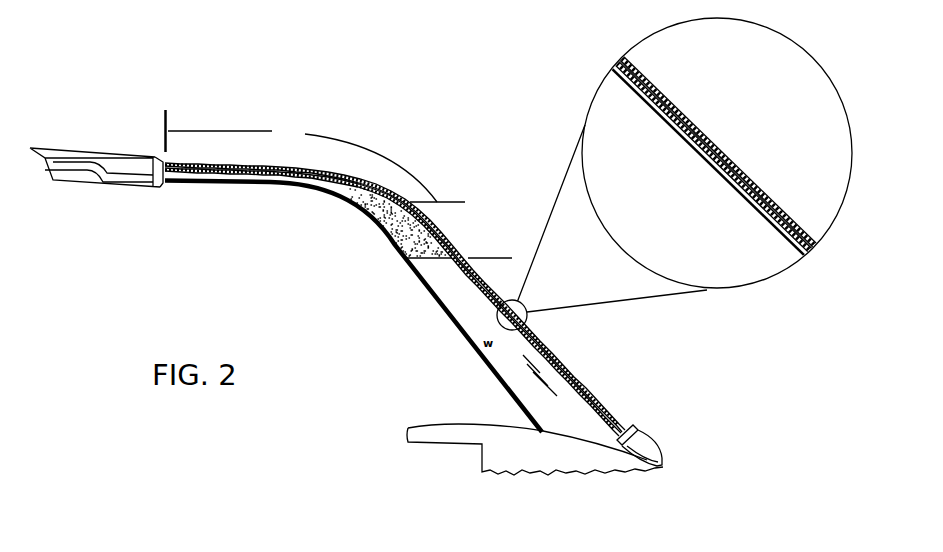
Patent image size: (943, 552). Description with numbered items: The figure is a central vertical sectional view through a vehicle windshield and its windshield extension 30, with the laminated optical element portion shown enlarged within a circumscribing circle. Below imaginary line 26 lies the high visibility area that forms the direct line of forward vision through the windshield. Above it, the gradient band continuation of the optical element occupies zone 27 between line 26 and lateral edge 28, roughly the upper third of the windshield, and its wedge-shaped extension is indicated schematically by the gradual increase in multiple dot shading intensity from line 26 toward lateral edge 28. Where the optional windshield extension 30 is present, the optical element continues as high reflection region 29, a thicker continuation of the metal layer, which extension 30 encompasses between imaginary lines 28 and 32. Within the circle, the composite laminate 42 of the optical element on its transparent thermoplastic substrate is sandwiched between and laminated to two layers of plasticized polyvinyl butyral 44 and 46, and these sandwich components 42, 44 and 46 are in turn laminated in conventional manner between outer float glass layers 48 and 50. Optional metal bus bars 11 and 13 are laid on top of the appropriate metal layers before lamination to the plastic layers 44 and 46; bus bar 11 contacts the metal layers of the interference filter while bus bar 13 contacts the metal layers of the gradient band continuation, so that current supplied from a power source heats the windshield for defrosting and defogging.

The metal bus bar 11 is at (648, 446).
The metal bus bar 13 is at (153, 169).
The imaginary line 26 is at (425, 266).
The zone 27 is at (492, 256).
The lateral edge 28 is at (455, 201).
The high reflection region 29 is at (302, 162).
The windshield extension 30 is at (270, 187).
The imaginary line 32 is at (164, 131).
The composite laminate 42 is at (627, 61).
The plasticized polyvinyl butyral layer 44 is at (647, 77).
The plasticized polyvinyl butyral layer 46 is at (652, 94).
The outer float glass layer 48 is at (732, 153).
The outer float glass layer 50 is at (705, 162).